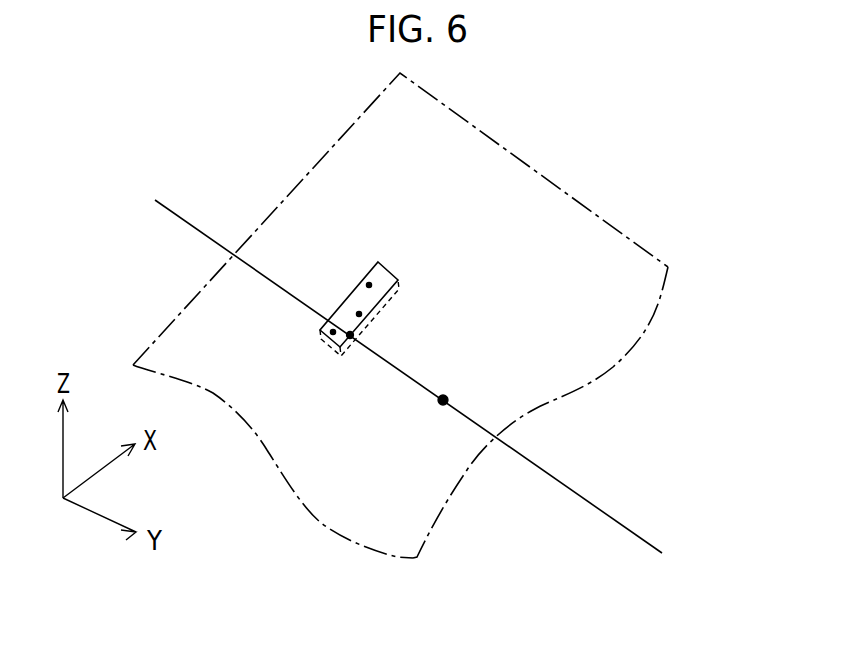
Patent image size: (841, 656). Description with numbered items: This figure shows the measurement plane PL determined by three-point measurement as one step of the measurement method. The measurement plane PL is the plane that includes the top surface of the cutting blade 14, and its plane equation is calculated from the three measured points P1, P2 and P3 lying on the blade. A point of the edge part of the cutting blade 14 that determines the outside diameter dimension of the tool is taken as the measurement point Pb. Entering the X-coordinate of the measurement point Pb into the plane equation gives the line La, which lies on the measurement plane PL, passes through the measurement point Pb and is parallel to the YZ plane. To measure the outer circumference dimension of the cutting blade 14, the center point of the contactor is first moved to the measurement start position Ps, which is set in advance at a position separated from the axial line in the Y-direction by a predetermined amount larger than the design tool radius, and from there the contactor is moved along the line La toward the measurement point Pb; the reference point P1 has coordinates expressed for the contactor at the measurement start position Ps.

The cutting blade 14 is at (377, 312).
The reference point P1 is at (333, 332).
The second point P2 is at (359, 314).
The third point P3 is at (369, 285).
The measurement point Pb is at (350, 340).
The measurement start position Ps is at (447, 397).
The measurement plane PL is at (617, 260).
The line La is at (617, 520).